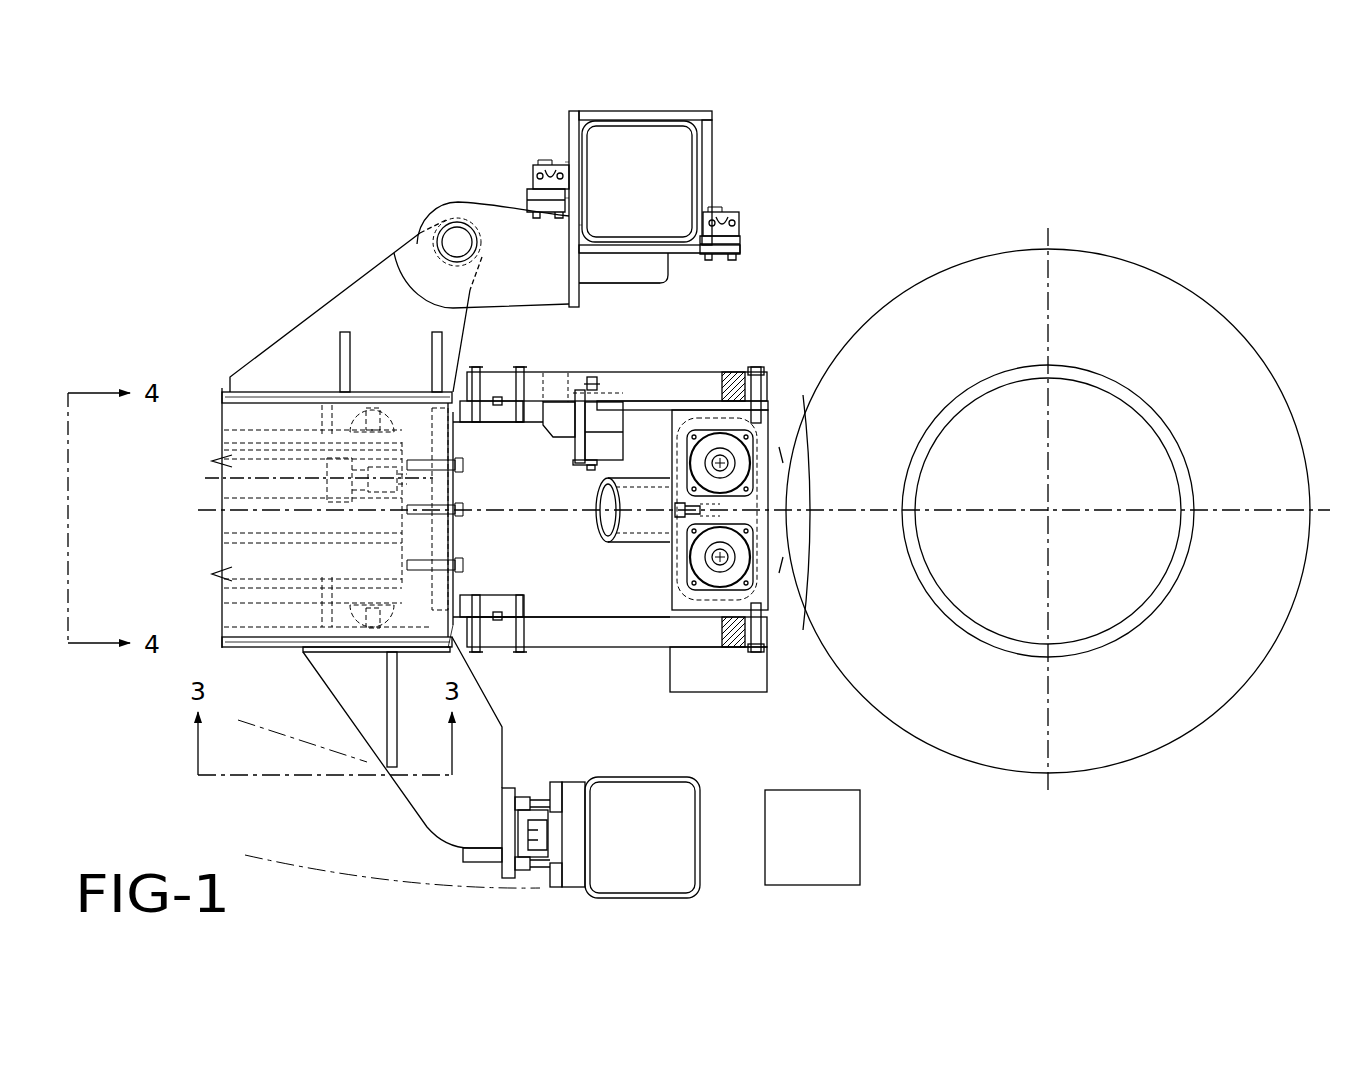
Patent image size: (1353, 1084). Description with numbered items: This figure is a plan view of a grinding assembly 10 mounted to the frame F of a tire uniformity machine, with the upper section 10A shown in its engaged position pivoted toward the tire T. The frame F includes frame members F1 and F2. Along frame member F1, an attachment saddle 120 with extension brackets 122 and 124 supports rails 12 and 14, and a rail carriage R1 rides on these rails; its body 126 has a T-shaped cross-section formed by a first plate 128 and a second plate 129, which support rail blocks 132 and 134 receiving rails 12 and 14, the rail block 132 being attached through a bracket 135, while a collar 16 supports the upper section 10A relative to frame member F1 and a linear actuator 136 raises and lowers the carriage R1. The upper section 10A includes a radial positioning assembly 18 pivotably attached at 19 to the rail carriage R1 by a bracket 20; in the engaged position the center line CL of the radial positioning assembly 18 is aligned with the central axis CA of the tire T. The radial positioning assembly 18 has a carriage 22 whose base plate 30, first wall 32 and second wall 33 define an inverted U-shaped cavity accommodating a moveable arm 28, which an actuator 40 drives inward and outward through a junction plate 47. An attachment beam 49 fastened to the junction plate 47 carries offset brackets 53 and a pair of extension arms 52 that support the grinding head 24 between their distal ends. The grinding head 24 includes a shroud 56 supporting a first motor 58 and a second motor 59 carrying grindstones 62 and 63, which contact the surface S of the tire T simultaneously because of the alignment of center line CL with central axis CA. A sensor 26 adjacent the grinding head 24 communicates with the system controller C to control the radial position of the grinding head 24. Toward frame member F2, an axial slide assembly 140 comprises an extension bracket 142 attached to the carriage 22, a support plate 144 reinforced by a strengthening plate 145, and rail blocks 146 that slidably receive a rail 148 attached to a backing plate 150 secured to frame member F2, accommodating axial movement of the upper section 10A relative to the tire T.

The grinding assembly 10 is at (178, 200).
The upper section 10A is at (312, 305).
The rail 12 is at (548, 182).
The rail 14 is at (722, 236).
The collar 16 is at (485, 207).
The radial positioning assembly 18 is at (205, 380).
The pivotal attachment 19 is at (455, 232).
The bracket 20 is at (365, 285).
The carriage 22 is at (248, 645).
The grinding head 24 is at (662, 563).
The sensor 26 is at (733, 680).
The moveable arm 28 is at (263, 517).
The base plate 30 is at (262, 563).
The first wall 32 is at (278, 398).
The second wall 33 is at (283, 630).
The actuator 40 is at (270, 468).
The junction plate 47 is at (418, 533).
The attachment beam 49 is at (440, 520).
The extension arms 52 is at (715, 385).
The offset brackets 53 is at (498, 416).
The shroud 56 is at (671, 455).
The first motor 58 is at (727, 485).
The second motor 59 is at (727, 533).
The grindstone 62 is at (772, 410).
The grindstone 63 is at (758, 572).
The attachment saddle 120 is at (713, 142).
The extension bracket 122 is at (567, 165).
The extension bracket 124 is at (714, 213).
The body 126 is at (563, 268).
The first plate 128 is at (573, 238).
The second plate 129 is at (628, 248).
The rail block 132 is at (535, 182).
The rail block 134 is at (725, 242).
The bracket 135 is at (560, 200).
The linear actuator 136 is at (678, 257).
The axial slide assembly 140 is at (538, 898).
The extension bracket 142 is at (425, 800).
The support plate 144 is at (508, 868).
The strengthening plate 145 is at (475, 858).
The rail block 146 is at (521, 803).
The rail 148 is at (540, 835).
The backing plate 150 is at (570, 793).
The frame F is at (665, 118).
The frame member F1 is at (590, 125).
The frame member F2 is at (640, 900).
The tire T is at (1154, 247).
The surface S is at (932, 252).
The system controller C is at (803, 853).
The center line CL is at (893, 508).
The central axis CA is at (1047, 510).
The rail carriage R1 is at (665, 268).